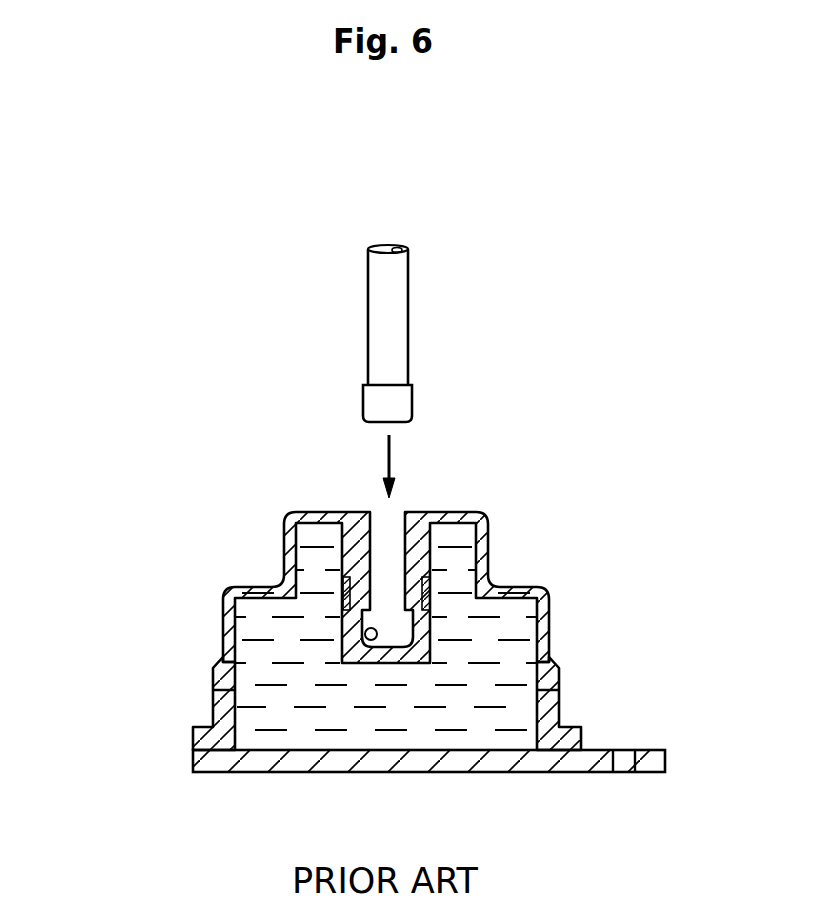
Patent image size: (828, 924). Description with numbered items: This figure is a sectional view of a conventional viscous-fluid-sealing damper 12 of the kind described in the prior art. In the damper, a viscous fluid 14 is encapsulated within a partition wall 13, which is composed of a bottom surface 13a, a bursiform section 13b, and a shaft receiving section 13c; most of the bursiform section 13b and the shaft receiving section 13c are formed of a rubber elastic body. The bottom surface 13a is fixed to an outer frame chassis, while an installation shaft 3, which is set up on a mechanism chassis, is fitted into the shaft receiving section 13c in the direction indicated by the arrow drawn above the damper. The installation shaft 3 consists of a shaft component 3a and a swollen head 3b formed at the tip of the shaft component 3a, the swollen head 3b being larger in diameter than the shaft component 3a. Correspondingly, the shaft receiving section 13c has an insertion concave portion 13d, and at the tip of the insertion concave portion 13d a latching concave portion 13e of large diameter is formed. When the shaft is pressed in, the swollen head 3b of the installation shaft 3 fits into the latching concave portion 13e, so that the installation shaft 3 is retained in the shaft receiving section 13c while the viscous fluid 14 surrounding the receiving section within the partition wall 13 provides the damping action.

The installation shaft 3 is at (401, 333).
The shaft component 3a is at (367, 323).
The swollen head 3b is at (363, 403).
The viscous-fluid-sealing damper 12 is at (484, 496).
The partition wall 13 is at (223, 600).
The bottom surface 13a is at (193, 766).
The bursiform section 13b is at (560, 668).
The shaft receiving section 13c is at (340, 556).
The insertion concave portion 13d is at (383, 512).
The latching concave portion 13e is at (367, 642).
The viscous fluid 14 is at (497, 606).